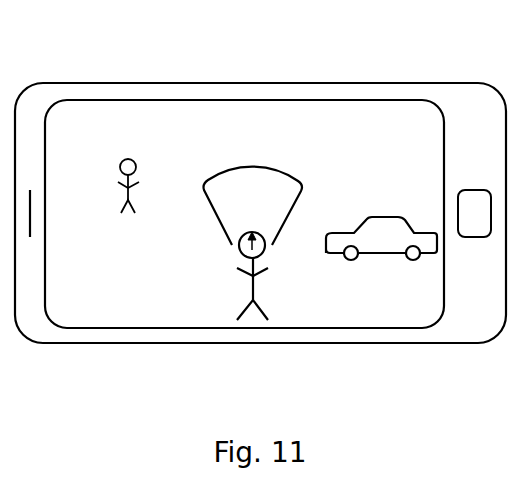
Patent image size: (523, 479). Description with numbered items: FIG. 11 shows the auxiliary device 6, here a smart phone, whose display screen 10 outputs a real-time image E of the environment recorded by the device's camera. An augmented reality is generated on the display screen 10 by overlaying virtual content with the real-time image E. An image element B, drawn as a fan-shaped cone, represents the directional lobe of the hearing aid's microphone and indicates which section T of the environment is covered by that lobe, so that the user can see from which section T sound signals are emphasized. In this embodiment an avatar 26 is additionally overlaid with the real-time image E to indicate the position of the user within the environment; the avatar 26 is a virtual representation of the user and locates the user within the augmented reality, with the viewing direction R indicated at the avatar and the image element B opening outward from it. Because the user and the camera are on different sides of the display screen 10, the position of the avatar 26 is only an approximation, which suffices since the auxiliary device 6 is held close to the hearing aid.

The auxiliary device 6 is at (93, 83).
The display screen 10 is at (165, 100).
The avatar 26 is at (240, 317).
The real-time image E is at (75, 148).
The image element B is at (213, 170).
The section T is at (306, 199).
The viewing direction R is at (236, 243).